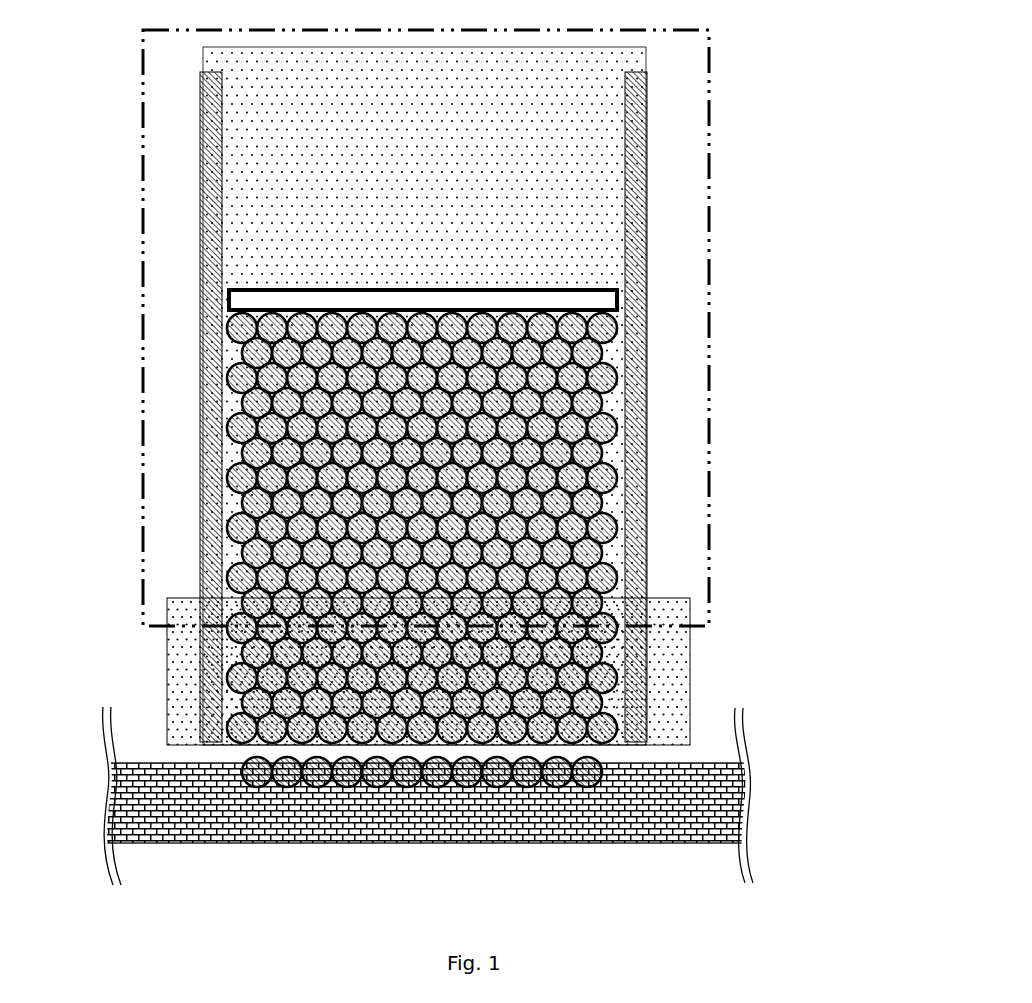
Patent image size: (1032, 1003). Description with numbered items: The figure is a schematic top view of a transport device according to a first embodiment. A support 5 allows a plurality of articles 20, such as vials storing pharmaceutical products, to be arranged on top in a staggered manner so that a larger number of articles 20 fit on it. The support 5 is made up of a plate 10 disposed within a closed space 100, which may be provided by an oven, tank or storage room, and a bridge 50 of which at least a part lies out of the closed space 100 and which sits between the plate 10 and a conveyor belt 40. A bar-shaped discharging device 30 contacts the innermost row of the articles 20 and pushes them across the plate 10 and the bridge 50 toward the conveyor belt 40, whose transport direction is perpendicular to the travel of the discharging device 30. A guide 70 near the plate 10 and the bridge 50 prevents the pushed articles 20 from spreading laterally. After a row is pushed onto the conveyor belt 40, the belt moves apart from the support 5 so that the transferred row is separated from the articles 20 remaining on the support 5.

The closed space 100 is at (143, 212).
The plate 10 is at (603, 168).
The articles 20 is at (650, 522).
The discharging device 30 is at (605, 296).
The conveyor belt 40 is at (740, 805).
The bridge 50 is at (690, 680).
The guide 70 is at (200, 395).
The support 5 is at (903, 503).